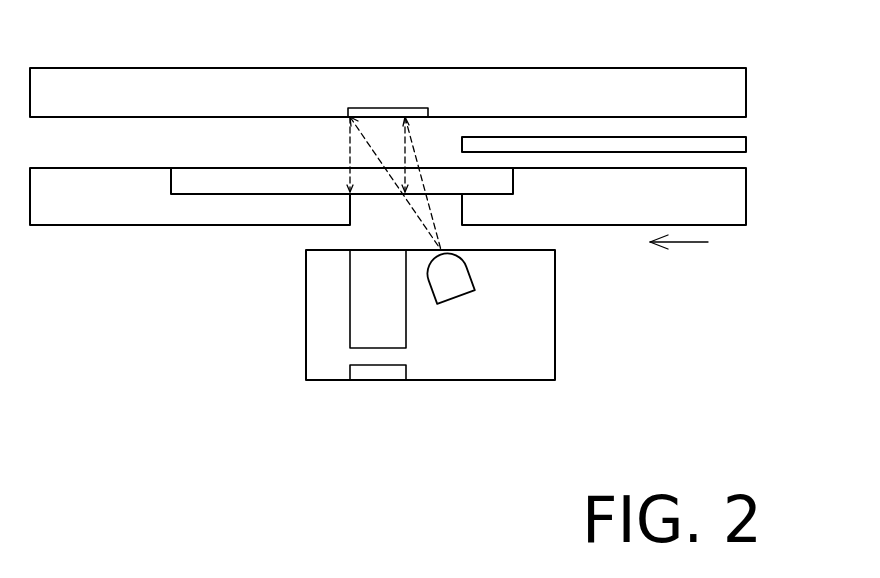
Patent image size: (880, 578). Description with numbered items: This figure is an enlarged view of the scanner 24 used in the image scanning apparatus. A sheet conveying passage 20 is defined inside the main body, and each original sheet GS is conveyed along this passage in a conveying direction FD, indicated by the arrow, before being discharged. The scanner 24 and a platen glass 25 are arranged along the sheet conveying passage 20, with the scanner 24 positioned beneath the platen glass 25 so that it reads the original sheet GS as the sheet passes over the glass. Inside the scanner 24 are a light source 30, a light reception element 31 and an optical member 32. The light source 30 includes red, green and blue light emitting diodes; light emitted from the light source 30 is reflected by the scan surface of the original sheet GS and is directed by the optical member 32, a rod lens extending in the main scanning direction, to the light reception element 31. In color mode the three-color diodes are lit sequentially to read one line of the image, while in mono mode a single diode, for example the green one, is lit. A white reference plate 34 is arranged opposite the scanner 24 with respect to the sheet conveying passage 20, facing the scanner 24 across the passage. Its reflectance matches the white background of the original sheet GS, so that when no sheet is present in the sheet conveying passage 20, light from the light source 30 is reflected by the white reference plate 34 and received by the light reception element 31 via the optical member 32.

The sheet conveying passage 20 is at (722, 117).
The original sheet GS is at (740, 145).
The platen glass 25 is at (193, 183).
The white reference plate 34 is at (373, 113).
The scanner 24 is at (422, 421).
The light source 30 is at (470, 297).
The light reception element 31 is at (402, 372).
The optical member 32 is at (396, 333).
The conveying direction FD is at (688, 245).